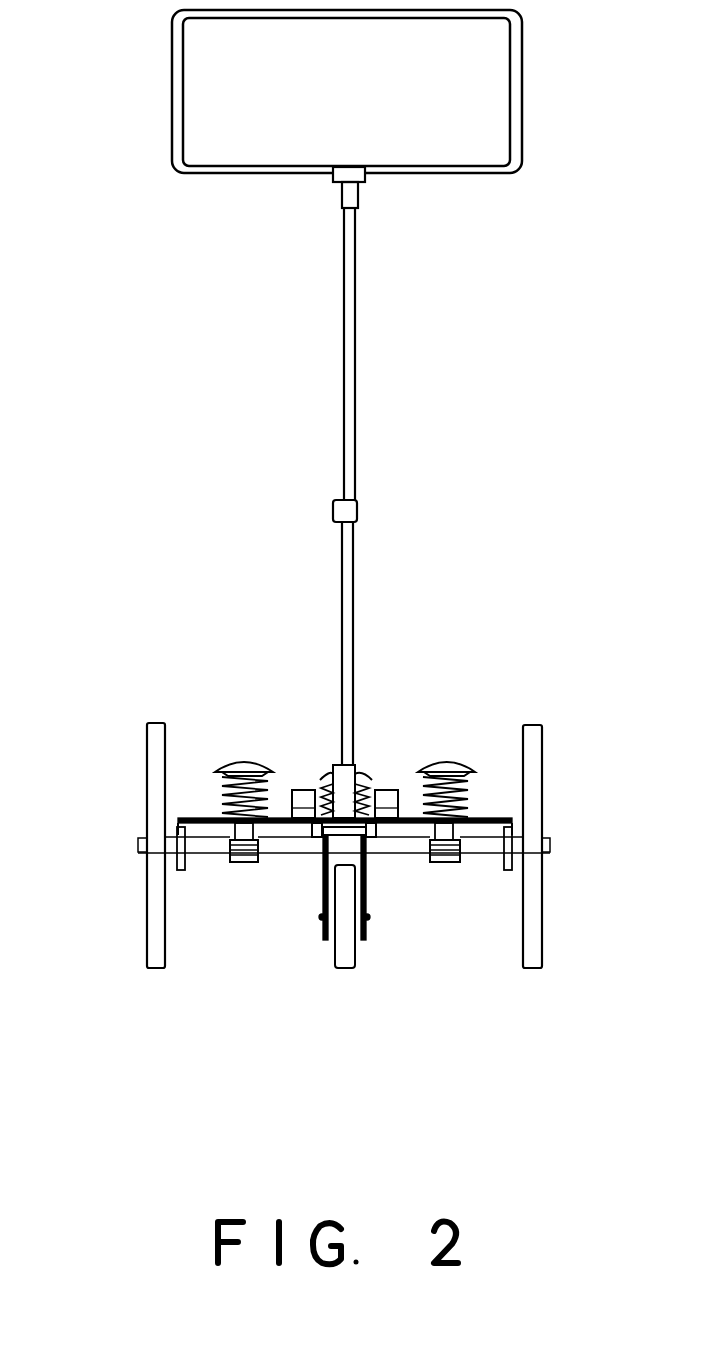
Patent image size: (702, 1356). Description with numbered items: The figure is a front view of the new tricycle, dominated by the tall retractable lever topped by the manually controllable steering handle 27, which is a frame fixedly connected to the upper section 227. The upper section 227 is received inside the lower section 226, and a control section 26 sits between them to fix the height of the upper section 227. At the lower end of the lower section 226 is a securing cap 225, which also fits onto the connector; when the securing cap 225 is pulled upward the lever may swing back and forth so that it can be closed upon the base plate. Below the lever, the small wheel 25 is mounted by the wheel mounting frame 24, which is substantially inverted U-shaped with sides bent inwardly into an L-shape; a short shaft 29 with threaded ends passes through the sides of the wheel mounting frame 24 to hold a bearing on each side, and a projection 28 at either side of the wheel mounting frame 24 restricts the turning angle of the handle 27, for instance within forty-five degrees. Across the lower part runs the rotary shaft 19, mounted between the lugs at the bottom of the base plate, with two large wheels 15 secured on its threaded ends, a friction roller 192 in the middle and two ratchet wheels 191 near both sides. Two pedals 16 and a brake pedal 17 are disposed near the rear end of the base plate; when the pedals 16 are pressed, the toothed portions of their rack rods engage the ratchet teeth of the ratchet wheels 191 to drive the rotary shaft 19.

The steering handle 27 is at (515, 168).
The upper section 227 is at (355, 362).
The control section 26 is at (357, 510).
The lower section 226 is at (353, 583).
The securing cap 225 is at (337, 777).
The brake pedal 17 is at (362, 780).
The short shaft 29 is at (300, 795).
The rotary shaft 19 is at (413, 850).
The pedals 16 is at (233, 762).
The ratchet wheels 191 is at (240, 862).
The projection 28 is at (312, 837).
The friction roller 192 is at (323, 870).
The wheel mounting frame 24 is at (362, 940).
The small wheel 25 is at (345, 957).
The large wheels 15 is at (157, 768).